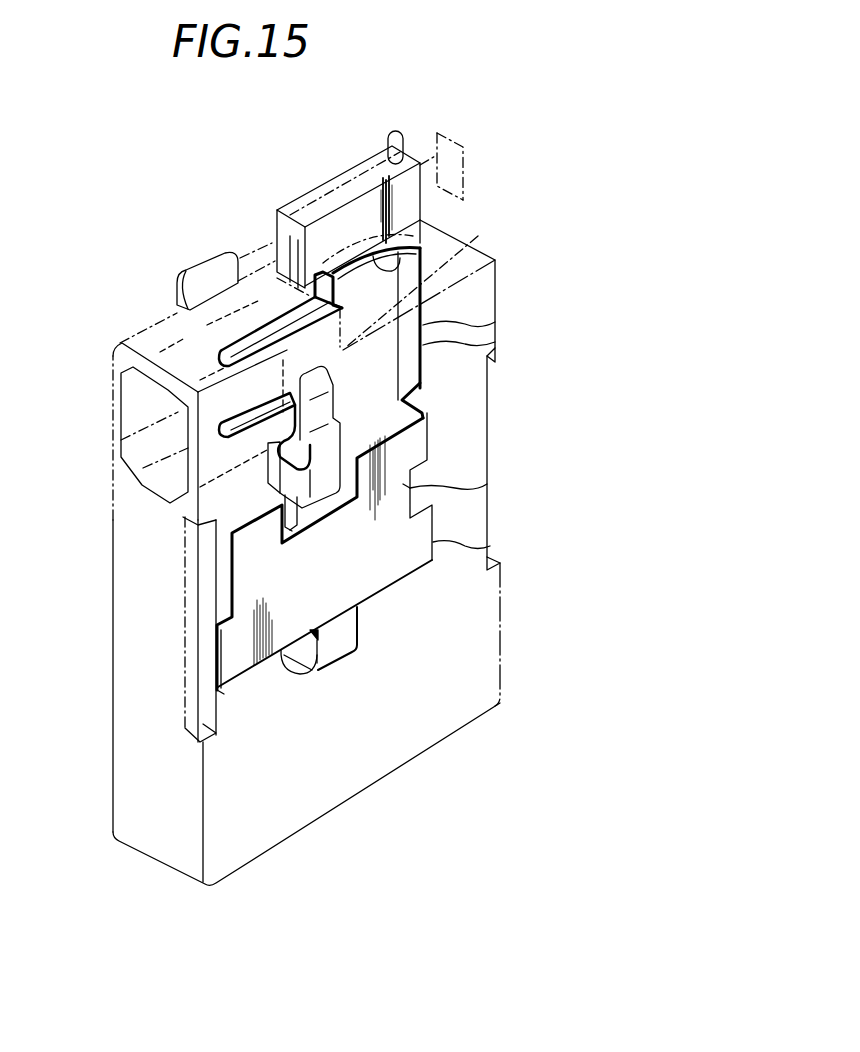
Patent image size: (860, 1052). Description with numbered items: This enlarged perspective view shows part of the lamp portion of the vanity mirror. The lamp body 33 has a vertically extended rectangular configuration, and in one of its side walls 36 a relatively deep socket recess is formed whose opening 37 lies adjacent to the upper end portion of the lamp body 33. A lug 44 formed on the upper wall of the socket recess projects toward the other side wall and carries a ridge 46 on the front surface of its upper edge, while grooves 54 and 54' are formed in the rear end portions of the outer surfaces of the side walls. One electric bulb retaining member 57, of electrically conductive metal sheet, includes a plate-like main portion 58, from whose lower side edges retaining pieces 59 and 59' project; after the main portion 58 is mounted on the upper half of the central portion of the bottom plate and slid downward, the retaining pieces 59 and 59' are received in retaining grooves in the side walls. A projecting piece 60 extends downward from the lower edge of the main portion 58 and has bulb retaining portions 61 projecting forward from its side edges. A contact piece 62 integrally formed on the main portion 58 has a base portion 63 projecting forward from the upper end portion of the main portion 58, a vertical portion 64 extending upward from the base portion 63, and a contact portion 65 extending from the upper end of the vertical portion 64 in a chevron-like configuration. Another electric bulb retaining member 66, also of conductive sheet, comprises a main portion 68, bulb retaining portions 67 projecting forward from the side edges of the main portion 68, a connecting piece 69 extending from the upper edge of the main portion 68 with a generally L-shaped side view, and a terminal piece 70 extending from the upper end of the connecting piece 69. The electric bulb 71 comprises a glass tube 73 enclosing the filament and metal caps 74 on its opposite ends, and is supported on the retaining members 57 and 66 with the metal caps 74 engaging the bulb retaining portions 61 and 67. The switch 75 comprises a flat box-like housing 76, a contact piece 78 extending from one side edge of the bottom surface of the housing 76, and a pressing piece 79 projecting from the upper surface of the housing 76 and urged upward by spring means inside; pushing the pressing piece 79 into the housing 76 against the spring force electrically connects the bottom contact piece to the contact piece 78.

The lamp body 33 is at (500, 268).
The side wall 36 is at (123, 705).
The opening 37 is at (138, 402).
The lug 44 is at (460, 143).
The ridge 46 is at (355, 172).
The groove 54 is at (139, 640).
The groove 54' is at (542, 374).
The electric bulb retaining member 57 is at (487, 484).
The main portion 58 is at (403, 487).
The retaining piece 59 is at (280, 556).
The retaining piece 59' is at (509, 547).
The projecting piece 60 is at (358, 627).
The bulb retaining portion 61 is at (287, 668).
The contact piece 62 is at (495, 342).
The base portion 63 is at (425, 400).
The vertical portion 64 is at (495, 322).
The contact portion 65 is at (422, 260).
The electric bulb retaining member 66 is at (332, 500).
The bulb retaining portion 67 is at (268, 470).
The main portion 68 is at (333, 395).
The connecting piece 69 is at (300, 372).
The terminal piece 70 is at (222, 423).
The electric bulb 71 is at (275, 510).
The glass tube 73 is at (288, 530).
The metal cap 74 is at (272, 445).
The switch 75 is at (318, 188).
The housing 76 is at (290, 202).
The contact piece 78 is at (237, 338).
The pressing piece 79 is at (397, 128).